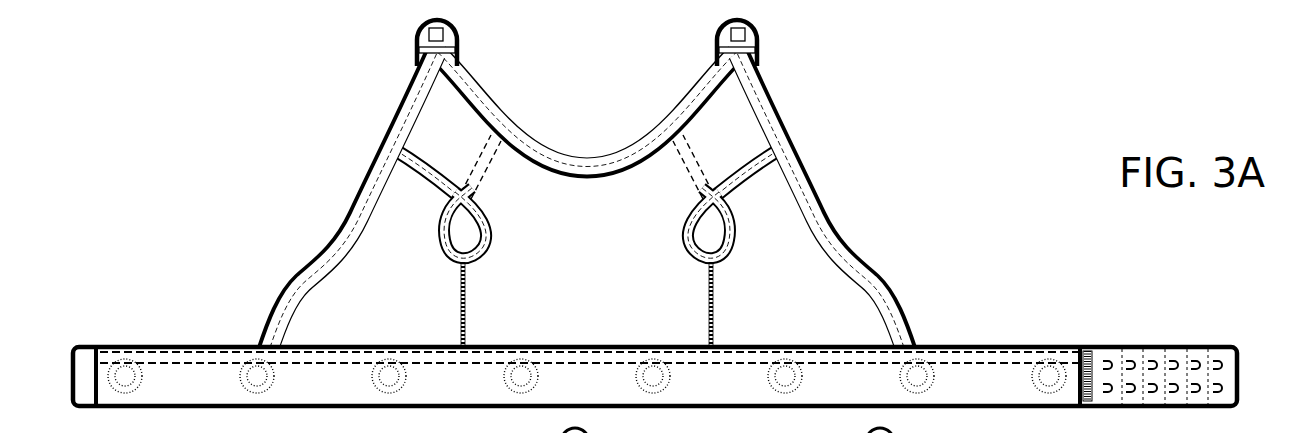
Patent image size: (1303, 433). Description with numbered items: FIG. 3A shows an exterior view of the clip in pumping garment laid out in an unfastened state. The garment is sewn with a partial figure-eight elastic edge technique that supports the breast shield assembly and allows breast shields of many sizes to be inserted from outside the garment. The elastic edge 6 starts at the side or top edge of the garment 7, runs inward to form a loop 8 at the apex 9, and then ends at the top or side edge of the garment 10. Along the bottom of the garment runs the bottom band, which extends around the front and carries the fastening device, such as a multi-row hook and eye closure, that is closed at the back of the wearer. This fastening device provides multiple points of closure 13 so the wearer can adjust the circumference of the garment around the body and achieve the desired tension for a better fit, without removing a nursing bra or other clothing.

The elastic edge 6 is at (425, 188).
The side or top edge of the garment 7 is at (372, 153).
The loop 8 is at (470, 195).
The apex 9 is at (468, 232).
The top or side edge of the garment 10 is at (512, 117).
The multiple points of closure 13 is at (1160, 338).